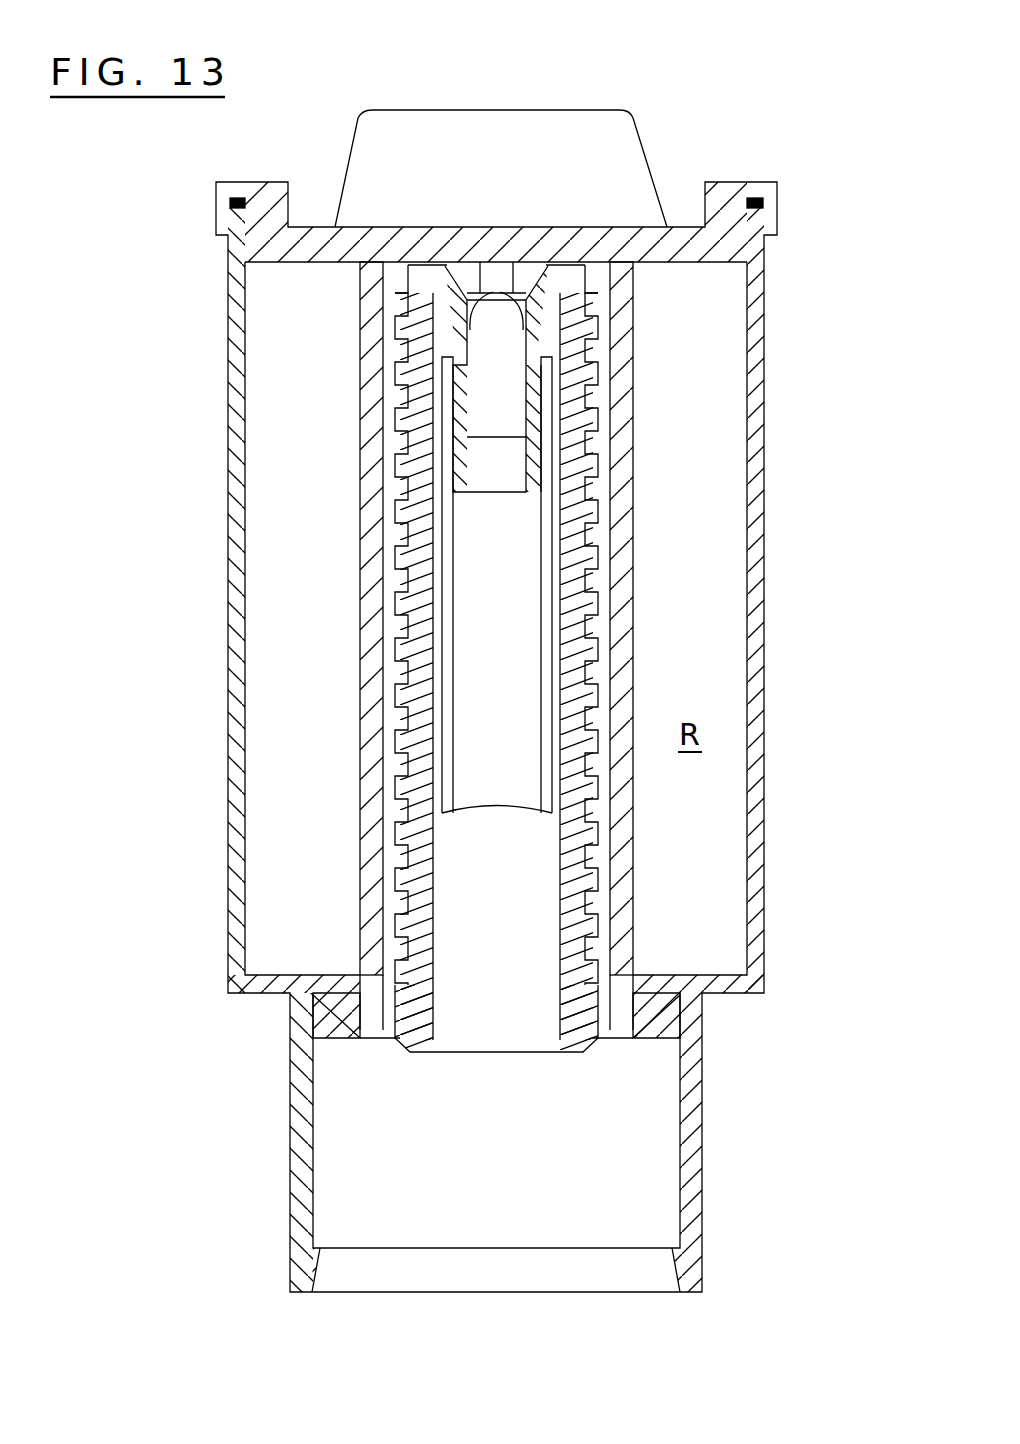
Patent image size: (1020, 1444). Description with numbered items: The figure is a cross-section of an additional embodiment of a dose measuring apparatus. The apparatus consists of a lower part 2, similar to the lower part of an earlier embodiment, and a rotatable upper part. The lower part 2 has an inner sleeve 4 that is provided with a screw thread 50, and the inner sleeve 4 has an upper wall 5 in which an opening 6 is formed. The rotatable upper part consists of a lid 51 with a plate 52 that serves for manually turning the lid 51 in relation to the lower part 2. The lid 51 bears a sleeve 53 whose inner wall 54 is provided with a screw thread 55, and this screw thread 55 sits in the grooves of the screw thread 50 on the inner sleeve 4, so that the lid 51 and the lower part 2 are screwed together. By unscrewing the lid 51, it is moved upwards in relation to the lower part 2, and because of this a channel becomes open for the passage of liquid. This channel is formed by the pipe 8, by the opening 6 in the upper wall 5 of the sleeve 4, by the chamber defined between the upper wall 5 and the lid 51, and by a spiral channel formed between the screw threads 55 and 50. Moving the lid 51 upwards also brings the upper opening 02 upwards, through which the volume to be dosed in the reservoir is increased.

The lower part 2 is at (774, 726).
The inner sleeve 4 is at (418, 915).
The upper wall 5 is at (448, 273).
The opening 6 is at (468, 326).
The pipe 8 is at (447, 731).
The screw thread 50 is at (400, 888).
The lid 51 is at (730, 195).
The plate 52 is at (632, 140).
The sleeve 53 is at (610, 503).
The inner wall 54 is at (593, 638).
The screw thread 55 is at (600, 410).
The upper opening 02 is at (607, 990).